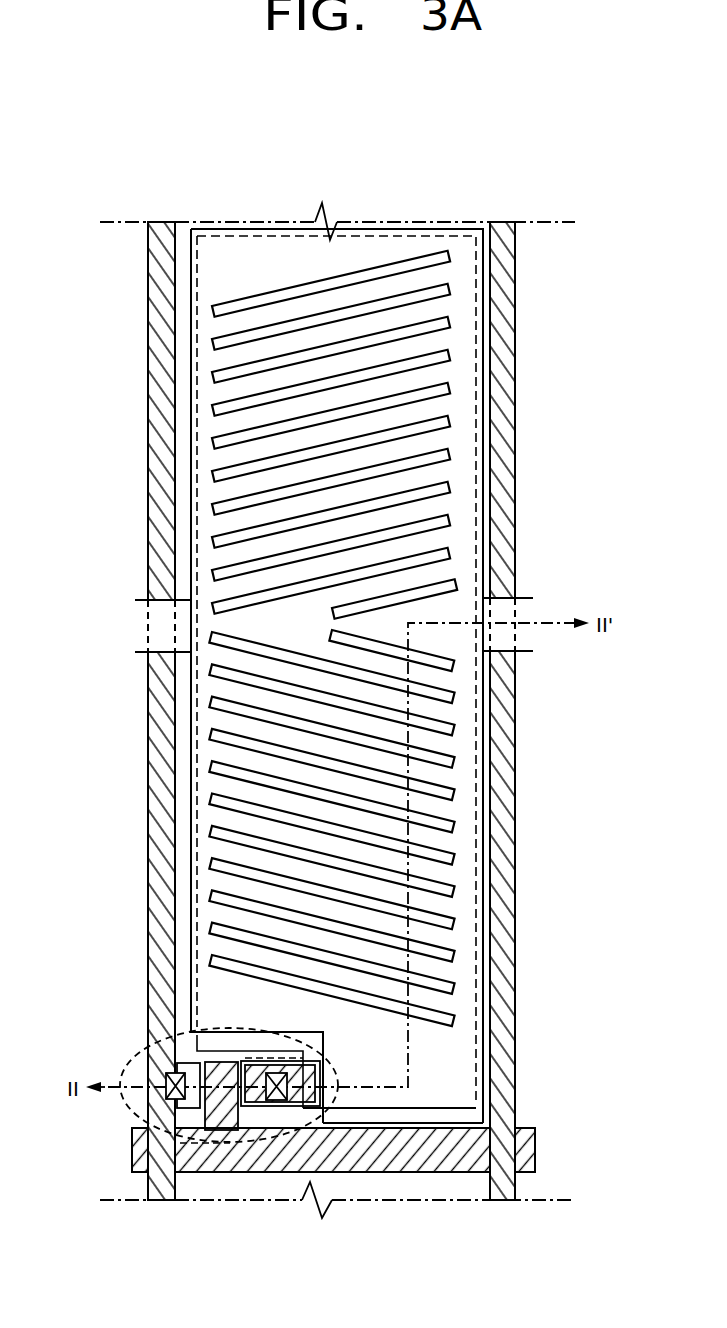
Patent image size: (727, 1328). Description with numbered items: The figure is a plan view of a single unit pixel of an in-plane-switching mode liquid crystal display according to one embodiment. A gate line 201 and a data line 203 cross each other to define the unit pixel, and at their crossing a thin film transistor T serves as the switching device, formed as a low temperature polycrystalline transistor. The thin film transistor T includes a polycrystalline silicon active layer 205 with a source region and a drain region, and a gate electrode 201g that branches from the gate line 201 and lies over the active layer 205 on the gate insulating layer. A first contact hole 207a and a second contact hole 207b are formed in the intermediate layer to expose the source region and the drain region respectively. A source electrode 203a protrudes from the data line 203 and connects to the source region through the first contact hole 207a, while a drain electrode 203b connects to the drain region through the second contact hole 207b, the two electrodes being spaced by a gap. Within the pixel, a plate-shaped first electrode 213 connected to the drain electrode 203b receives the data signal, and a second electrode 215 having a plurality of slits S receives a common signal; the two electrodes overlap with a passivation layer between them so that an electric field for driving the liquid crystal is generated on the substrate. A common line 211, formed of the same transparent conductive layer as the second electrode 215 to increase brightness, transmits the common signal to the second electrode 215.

The gate line 201 is at (478, 1173).
The gate electrode 201g is at (228, 1128).
The data line 203 is at (162, 381).
The source electrode 203a is at (178, 1108).
The drain electrode 203b is at (250, 1104).
The active layer 205 is at (203, 1130).
The first contact hole 207a is at (167, 1090).
The second contact hole 207b is at (285, 1098).
The common line 211 is at (497, 582).
The first electrode 213 is at (483, 1032).
The second electrode 215 is at (457, 1117).
The slits S is at (440, 724).
The thin film transistor T is at (128, 1060).